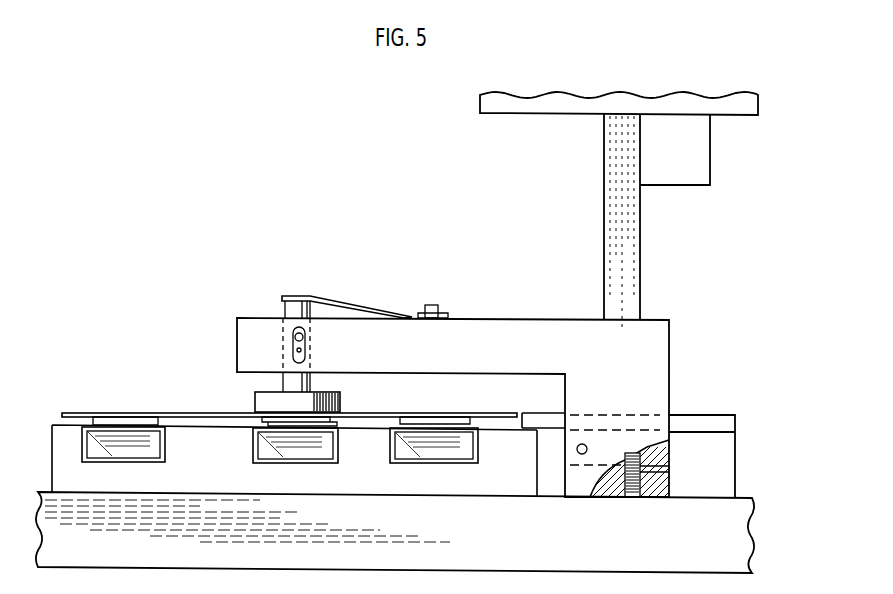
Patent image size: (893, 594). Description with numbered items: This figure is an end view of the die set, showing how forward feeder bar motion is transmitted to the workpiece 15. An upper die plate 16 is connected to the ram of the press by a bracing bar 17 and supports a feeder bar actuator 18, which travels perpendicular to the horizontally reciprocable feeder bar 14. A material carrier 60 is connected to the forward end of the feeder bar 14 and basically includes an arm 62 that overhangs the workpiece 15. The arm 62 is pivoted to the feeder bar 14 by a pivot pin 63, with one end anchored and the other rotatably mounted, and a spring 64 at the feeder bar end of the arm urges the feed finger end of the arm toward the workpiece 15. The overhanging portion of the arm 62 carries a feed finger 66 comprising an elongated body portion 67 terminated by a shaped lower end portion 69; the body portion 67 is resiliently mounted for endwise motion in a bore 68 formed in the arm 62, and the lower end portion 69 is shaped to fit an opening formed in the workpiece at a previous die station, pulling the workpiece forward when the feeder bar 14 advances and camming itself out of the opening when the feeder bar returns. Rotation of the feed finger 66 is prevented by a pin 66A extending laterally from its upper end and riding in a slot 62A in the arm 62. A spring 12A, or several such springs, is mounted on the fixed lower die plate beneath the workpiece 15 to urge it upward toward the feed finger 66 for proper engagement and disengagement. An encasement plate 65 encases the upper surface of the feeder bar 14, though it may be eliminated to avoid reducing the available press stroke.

The upper die plate 16 is at (569, 102).
The bracing bar 17 is at (698, 157).
The feeder bar actuator 18 is at (621, 220).
The material carrier 60 is at (403, 407).
The arm 62 is at (572, 340).
The slot 62A is at (300, 338).
The feed finger 66 is at (281, 309).
The pin 66A is at (297, 342).
The bore 68 is at (306, 350).
The elongated body portion 67 is at (310, 386).
The shaped lower end portion 69 is at (268, 400).
The workpiece 15 is at (375, 414).
The spring 12A is at (141, 445).
The encasement plate 65 is at (695, 421).
The pivot pin 63 is at (578, 448).
The spring 64 is at (618, 497).
The feeder bar 14 is at (645, 492).